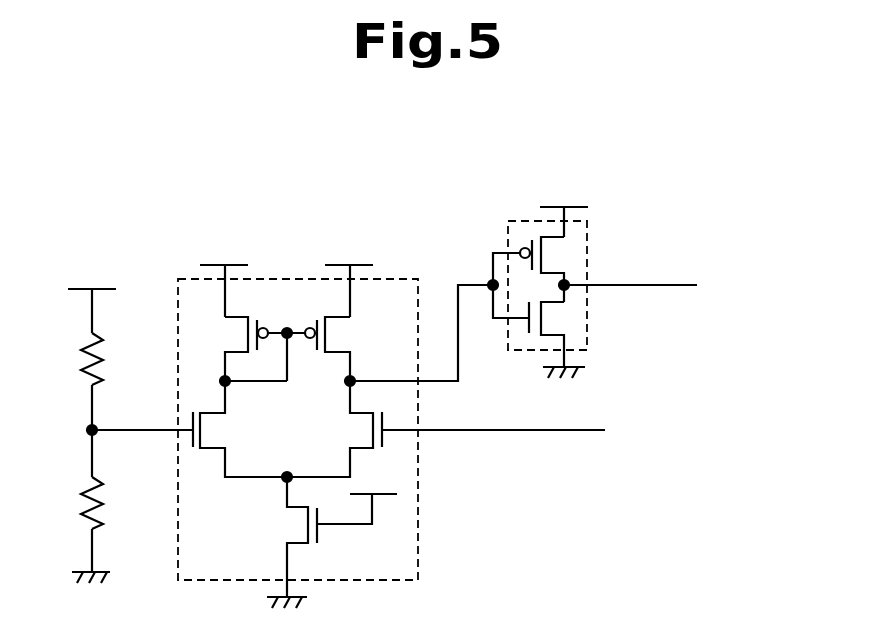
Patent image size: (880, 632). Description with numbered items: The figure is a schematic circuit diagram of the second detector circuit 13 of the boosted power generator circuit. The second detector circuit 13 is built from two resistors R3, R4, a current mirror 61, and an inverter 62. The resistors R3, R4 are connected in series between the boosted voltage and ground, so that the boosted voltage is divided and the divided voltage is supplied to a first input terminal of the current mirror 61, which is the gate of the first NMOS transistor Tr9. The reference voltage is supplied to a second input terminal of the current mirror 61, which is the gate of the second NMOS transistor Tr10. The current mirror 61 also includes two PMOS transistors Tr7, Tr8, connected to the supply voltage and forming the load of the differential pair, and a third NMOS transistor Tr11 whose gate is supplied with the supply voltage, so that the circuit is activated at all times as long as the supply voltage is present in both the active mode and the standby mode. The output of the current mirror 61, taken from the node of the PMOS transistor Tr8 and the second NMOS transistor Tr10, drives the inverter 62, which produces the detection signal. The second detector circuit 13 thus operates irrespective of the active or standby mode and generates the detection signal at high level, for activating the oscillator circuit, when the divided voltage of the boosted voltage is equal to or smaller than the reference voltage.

The second detector circuit 13 is at (675, 189).
The current mirror 61 is at (284, 279).
The inverter 62 is at (507, 233).
The resistor R3 is at (97, 378).
The resistor R4 is at (97, 518).
The PMOS transistor Tr7 is at (238, 312).
The PMOS transistor Tr8 is at (335, 356).
The first NMOS transistor Tr9 is at (208, 450).
The second NMOS transistor Tr10 is at (358, 436).
The third NMOS transistor Tr11 is at (302, 548).